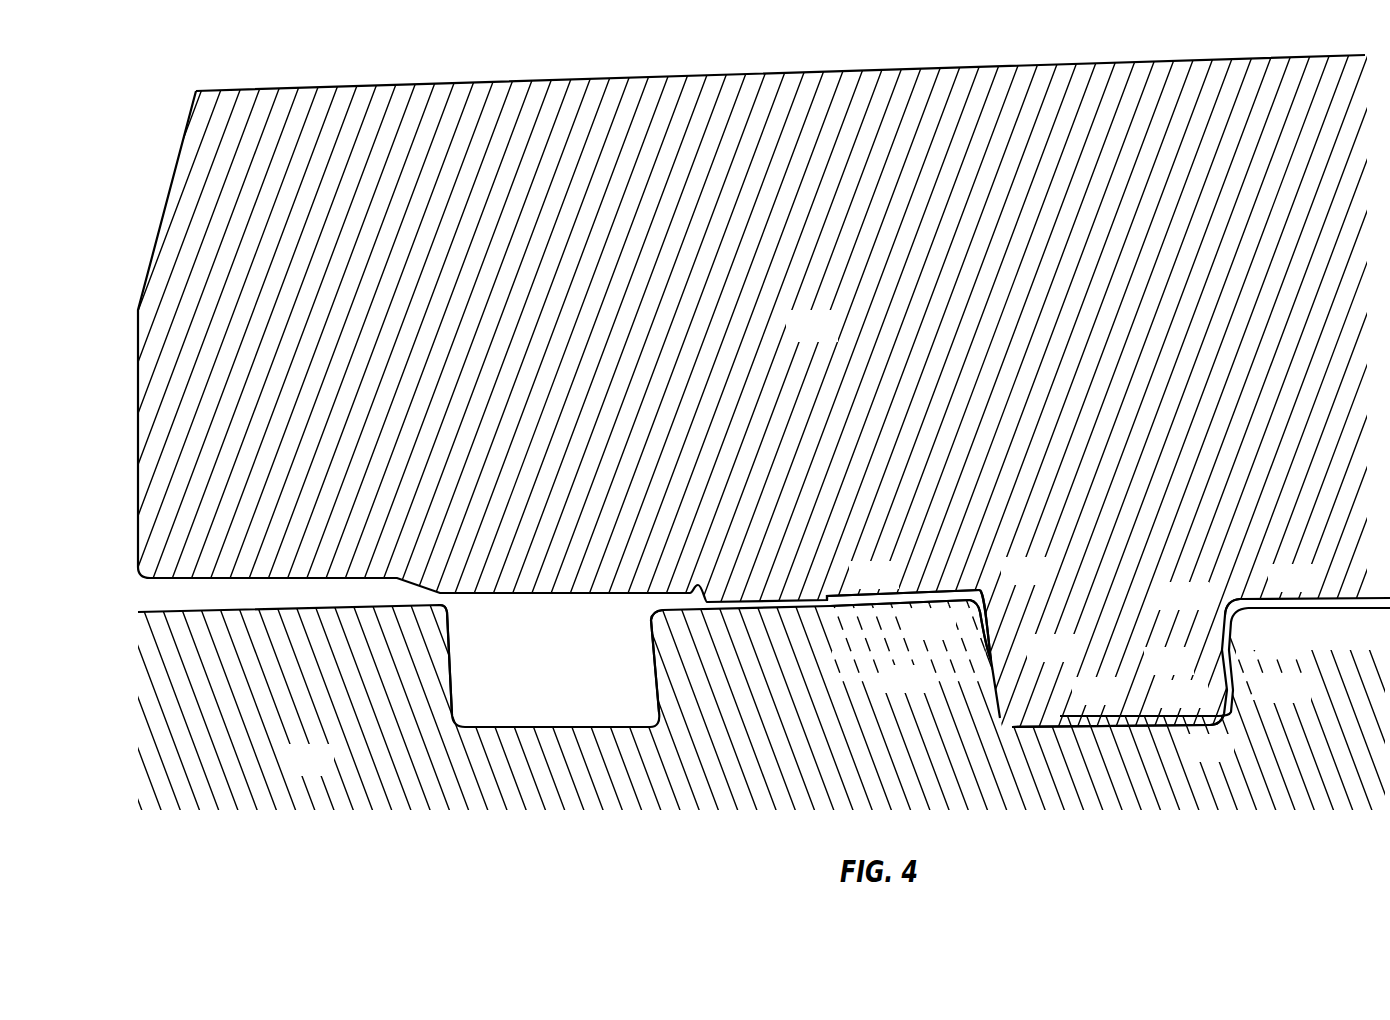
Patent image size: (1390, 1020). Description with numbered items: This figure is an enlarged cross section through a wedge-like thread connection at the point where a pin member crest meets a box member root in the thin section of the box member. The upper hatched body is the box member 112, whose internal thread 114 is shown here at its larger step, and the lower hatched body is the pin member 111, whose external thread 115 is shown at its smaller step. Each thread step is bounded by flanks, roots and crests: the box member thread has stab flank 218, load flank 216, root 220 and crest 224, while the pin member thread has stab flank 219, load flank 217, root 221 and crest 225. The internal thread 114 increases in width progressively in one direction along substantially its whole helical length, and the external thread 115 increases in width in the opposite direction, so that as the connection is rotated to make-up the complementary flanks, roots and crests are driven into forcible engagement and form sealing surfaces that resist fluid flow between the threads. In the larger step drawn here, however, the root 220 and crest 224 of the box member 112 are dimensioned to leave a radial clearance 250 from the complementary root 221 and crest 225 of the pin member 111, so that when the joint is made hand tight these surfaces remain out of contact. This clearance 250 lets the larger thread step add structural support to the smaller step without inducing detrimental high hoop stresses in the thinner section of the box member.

The pin member 111 is at (332, 772).
The box member 112 is at (836, 338).
The internal thread 114 is at (1130, 715).
The external thread 115 is at (867, 607).
The load flank 216 is at (1229, 658).
The load flank 217 is at (1226, 681).
The stab flank 218 is at (984, 631).
The stab flank 219 is at (995, 668).
The root 220 is at (1303, 608).
The root 221 is at (1043, 716).
The crest 224 is at (1151, 718).
The crest 225 is at (1347, 605).
The radial clearance 250 is at (1219, 720).